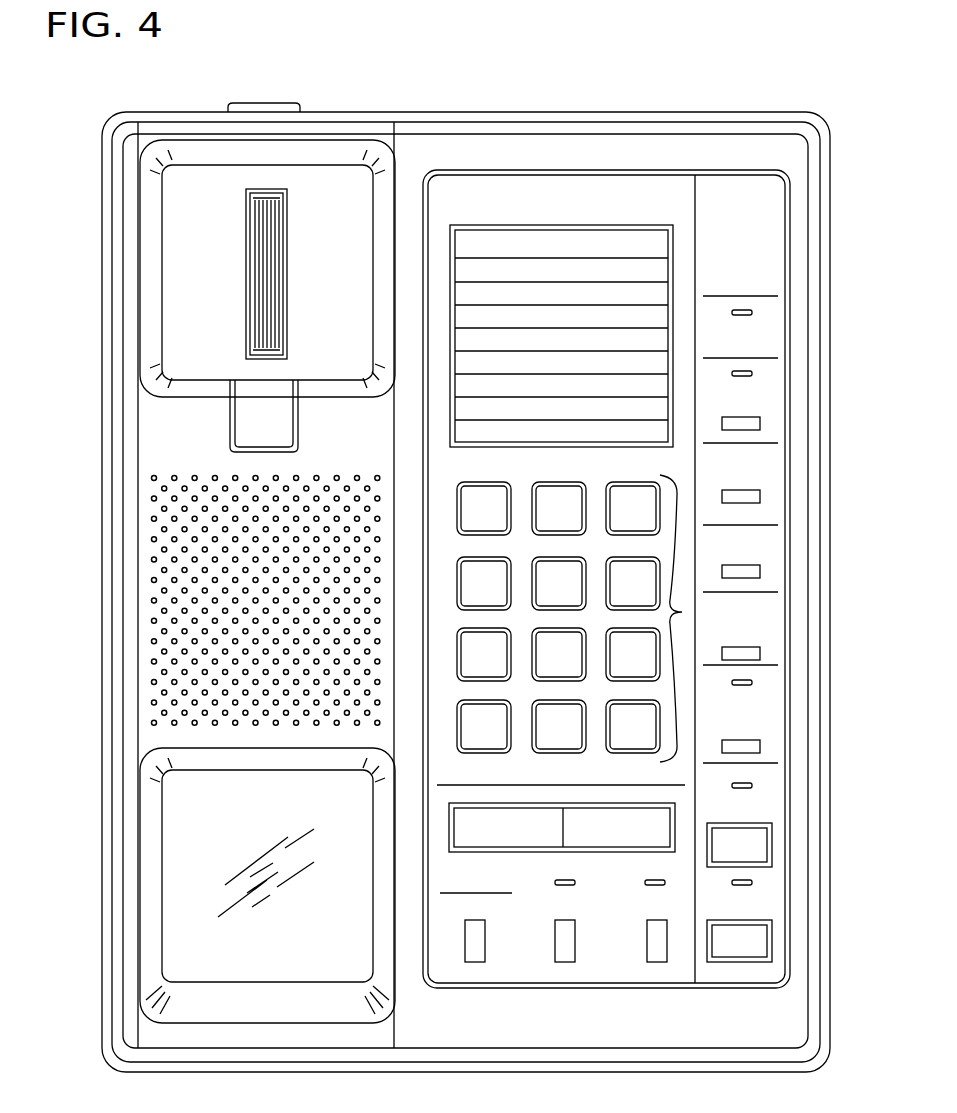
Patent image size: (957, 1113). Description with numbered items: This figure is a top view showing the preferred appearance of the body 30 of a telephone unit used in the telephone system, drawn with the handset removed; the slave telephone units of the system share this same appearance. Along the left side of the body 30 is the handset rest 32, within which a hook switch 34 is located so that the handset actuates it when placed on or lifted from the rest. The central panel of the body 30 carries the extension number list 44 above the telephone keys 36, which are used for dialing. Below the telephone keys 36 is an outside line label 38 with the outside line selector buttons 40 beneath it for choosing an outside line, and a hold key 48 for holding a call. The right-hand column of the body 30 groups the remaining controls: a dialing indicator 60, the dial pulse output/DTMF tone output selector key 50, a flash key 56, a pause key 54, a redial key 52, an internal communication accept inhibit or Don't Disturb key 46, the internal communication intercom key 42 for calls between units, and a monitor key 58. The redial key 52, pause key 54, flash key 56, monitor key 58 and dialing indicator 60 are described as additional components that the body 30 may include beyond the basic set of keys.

The body 30 is at (448, 100).
The handset rest 32 is at (175, 290).
The hook switch 34 is at (256, 218).
The telephone keys 36 is at (682, 612).
The outside line label 38 is at (497, 850).
The outside line selector buttons 40 is at (565, 962).
The internal communication intercom key 42 is at (750, 855).
The extension number list 44 is at (658, 277).
The internal communication accept inhibit key 46 is at (760, 745).
The hold key 48 is at (475, 962).
The dial pulse output/DTMF output selector key 50 is at (760, 423).
The redial key 52 is at (760, 652).
The pause key 54 is at (760, 571).
The flash key 56 is at (760, 497).
The monitor key 58 is at (748, 942).
The dialing indicator 60 is at (757, 313).